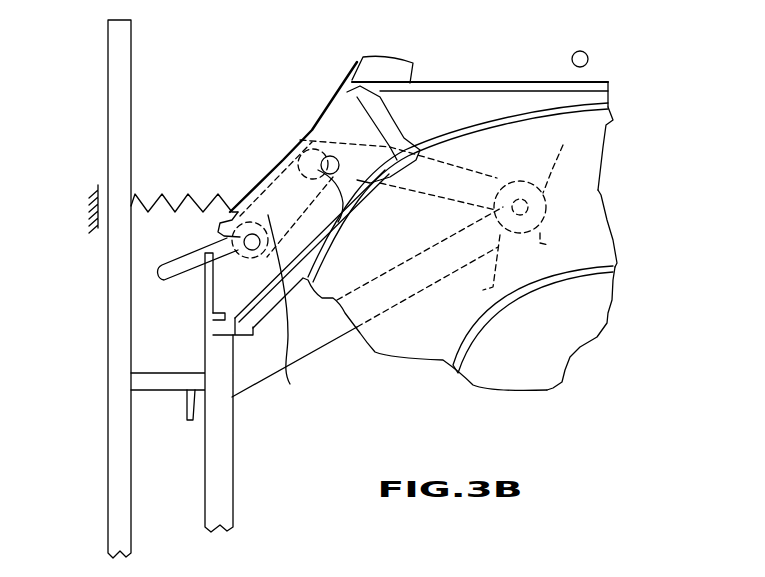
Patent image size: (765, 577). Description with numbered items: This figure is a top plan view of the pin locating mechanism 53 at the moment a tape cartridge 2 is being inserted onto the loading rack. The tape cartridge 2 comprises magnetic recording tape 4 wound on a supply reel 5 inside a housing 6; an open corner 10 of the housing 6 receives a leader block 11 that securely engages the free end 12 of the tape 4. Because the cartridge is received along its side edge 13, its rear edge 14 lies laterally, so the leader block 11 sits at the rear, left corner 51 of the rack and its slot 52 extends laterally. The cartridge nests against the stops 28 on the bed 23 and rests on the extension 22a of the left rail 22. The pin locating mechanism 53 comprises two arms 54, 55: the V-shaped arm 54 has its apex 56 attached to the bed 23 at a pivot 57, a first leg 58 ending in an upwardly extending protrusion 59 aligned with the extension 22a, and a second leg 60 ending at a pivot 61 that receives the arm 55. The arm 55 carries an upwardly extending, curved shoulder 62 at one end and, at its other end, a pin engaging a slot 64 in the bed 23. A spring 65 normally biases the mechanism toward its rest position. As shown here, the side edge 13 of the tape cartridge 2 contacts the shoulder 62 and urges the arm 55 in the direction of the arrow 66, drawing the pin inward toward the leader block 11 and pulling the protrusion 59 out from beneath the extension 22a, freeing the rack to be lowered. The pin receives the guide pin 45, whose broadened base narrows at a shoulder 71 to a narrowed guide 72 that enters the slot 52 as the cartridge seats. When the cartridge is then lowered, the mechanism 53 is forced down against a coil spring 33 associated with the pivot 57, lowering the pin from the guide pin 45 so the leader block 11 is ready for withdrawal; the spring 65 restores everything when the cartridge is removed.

The tape cartridge 2 is at (590, 147).
The magnetic recording tape 4 is at (593, 220).
The supply reel 5 is at (592, 312).
The housing 6 is at (598, 82).
The corner 10 is at (253, 97).
The leader block 11 is at (392, 134).
The free end 12 is at (370, 206).
The side edge 13 is at (487, 82).
The rear edge 14 is at (193, 352).
The left rail 22 is at (107, 350).
The extension 22a is at (223, 513).
The bed 23 is at (404, 430).
The stops 28 is at (578, 50).
The coil spring 33 is at (401, 233).
The guide pin 45 is at (257, 232).
The rear, left corner 51 is at (223, 67).
The slot 52 is at (196, 222).
The pin locating mechanism 53 is at (295, 117).
The arm 54 is at (328, 333).
The arm 55 is at (331, 97).
The apex 56 is at (563, 245).
The pivot 57 is at (562, 156).
The first leg 58 is at (253, 386).
The protrusion 59 is at (190, 422).
The second leg 60 is at (483, 172).
The pivot 61 is at (293, 143).
The shoulder 62 is at (390, 63).
The slot 64 is at (160, 265).
The spring 65 is at (133, 210).
The arrow 66 is at (190, 137).
The shoulder 71 is at (230, 238).
The narrowed guide 72 is at (294, 304).